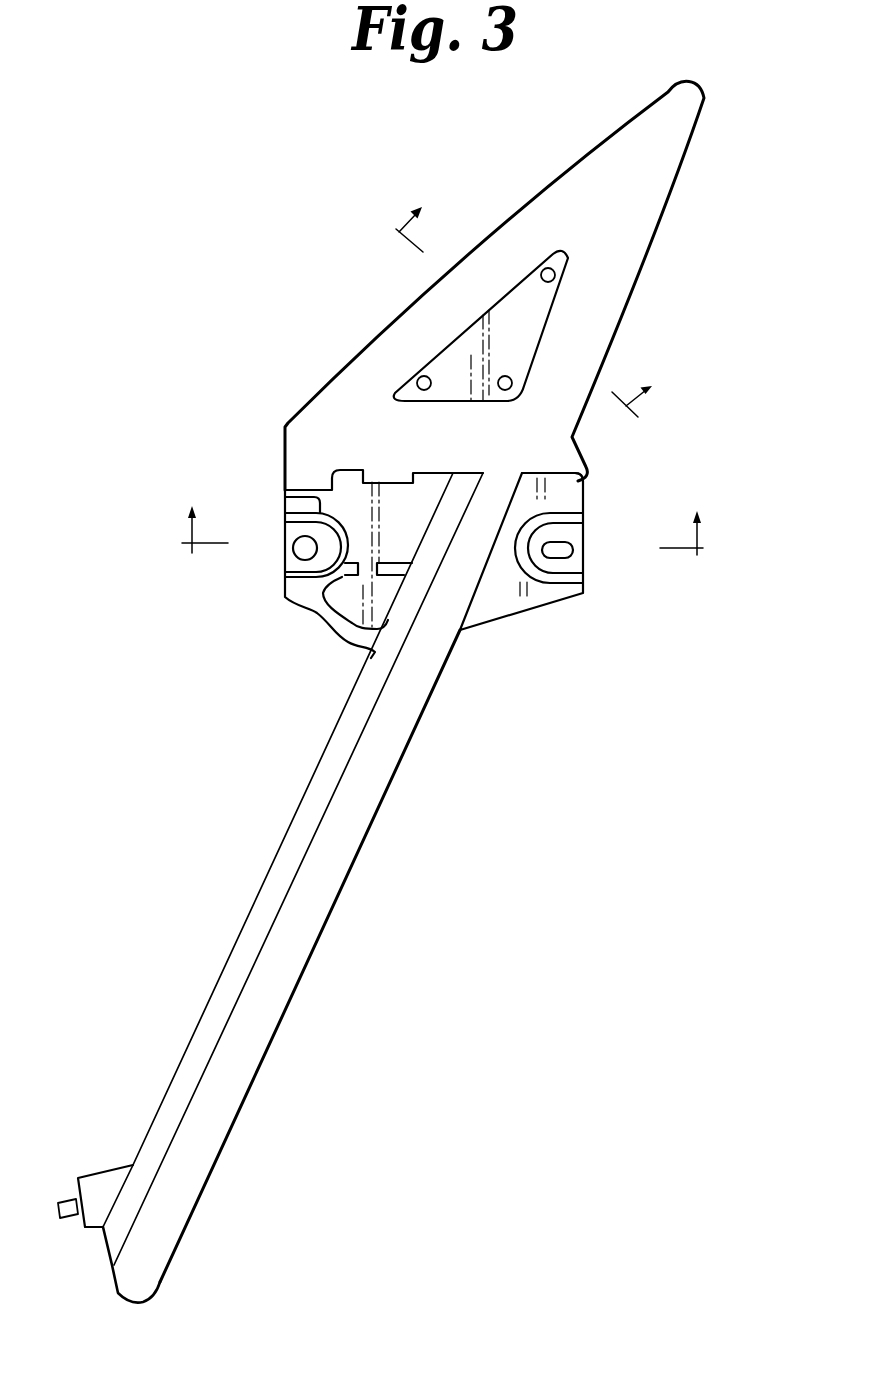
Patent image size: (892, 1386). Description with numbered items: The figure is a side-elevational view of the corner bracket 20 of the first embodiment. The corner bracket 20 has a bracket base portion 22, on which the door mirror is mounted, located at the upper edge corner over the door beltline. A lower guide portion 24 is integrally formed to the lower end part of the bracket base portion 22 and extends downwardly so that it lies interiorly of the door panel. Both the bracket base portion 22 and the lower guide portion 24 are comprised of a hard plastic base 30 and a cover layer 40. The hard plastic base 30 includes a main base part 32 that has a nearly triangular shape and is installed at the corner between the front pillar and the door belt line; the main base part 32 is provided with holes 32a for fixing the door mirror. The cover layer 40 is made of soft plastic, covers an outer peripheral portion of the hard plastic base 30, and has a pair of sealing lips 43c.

The corner bracket 20 is at (363, 303).
The bracket base portion 22 is at (658, 245).
The lower guide portion 24 is at (347, 890).
The hard plastic base 30 is at (500, 607).
The main base part 32 is at (567, 492).
The holes 32a is at (543, 268).
The cover layer 40 is at (268, 1010).
The sealing lips 43c is at (400, 757).